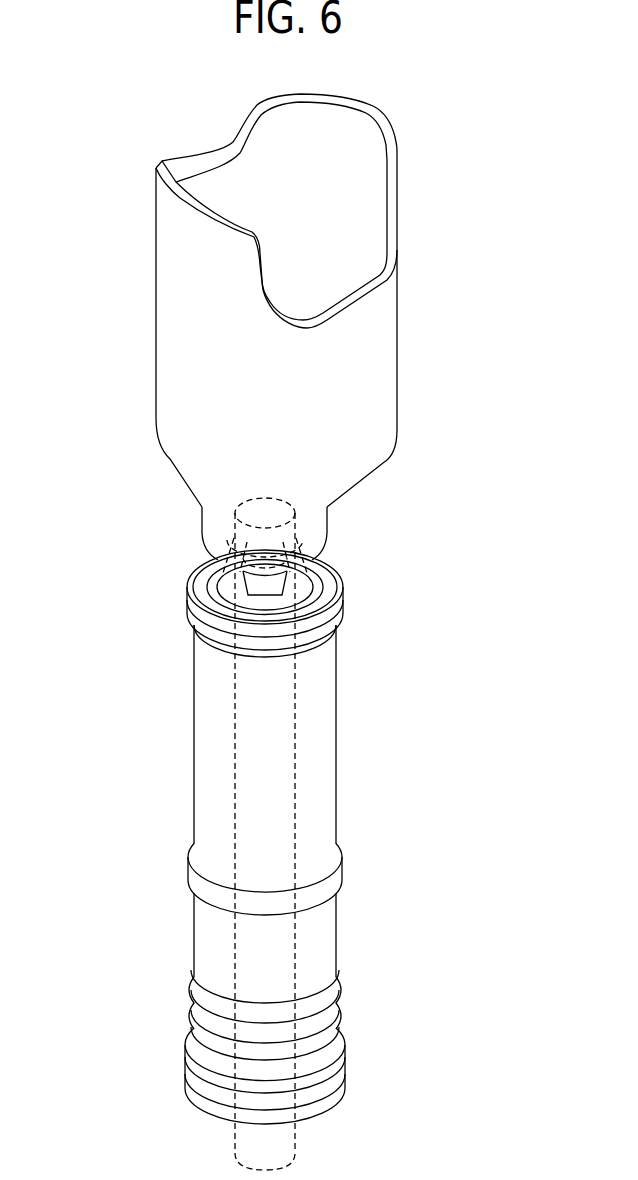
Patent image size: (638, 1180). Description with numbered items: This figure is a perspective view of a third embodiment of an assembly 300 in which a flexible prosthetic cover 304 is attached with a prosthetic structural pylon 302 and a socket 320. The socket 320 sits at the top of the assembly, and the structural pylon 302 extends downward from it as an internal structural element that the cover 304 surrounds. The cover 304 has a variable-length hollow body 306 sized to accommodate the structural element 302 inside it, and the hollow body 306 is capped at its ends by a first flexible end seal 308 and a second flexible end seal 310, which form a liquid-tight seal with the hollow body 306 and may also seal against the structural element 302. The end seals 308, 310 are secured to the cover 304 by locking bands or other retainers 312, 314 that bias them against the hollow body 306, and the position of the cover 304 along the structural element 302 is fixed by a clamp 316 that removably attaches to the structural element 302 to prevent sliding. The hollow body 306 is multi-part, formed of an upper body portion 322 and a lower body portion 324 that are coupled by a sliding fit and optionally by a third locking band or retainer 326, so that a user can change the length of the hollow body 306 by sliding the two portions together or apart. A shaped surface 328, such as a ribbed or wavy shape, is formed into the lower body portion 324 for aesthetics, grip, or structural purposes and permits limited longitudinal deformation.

The assembly 300 is at (454, 78).
The socket 320 is at (392, 356).
The flexible prosthetic cover 304 is at (446, 736).
The prosthetic structural pylon 302 is at (300, 812).
The first flexible end seal 308 is at (332, 556).
The clamp 316 is at (343, 584).
The locking band or retainer 312 is at (340, 617).
The variable-length hollow body 306 is at (167, 630).
The upper body portion 322 is at (328, 775).
The third locking band or retainer 326 is at (343, 877).
The lower body portion 324 is at (333, 947).
The shaped surface 328 is at (338, 1027).
The locking band or retainer 314 is at (343, 1080).
The second flexible end seal 310 is at (315, 1115).